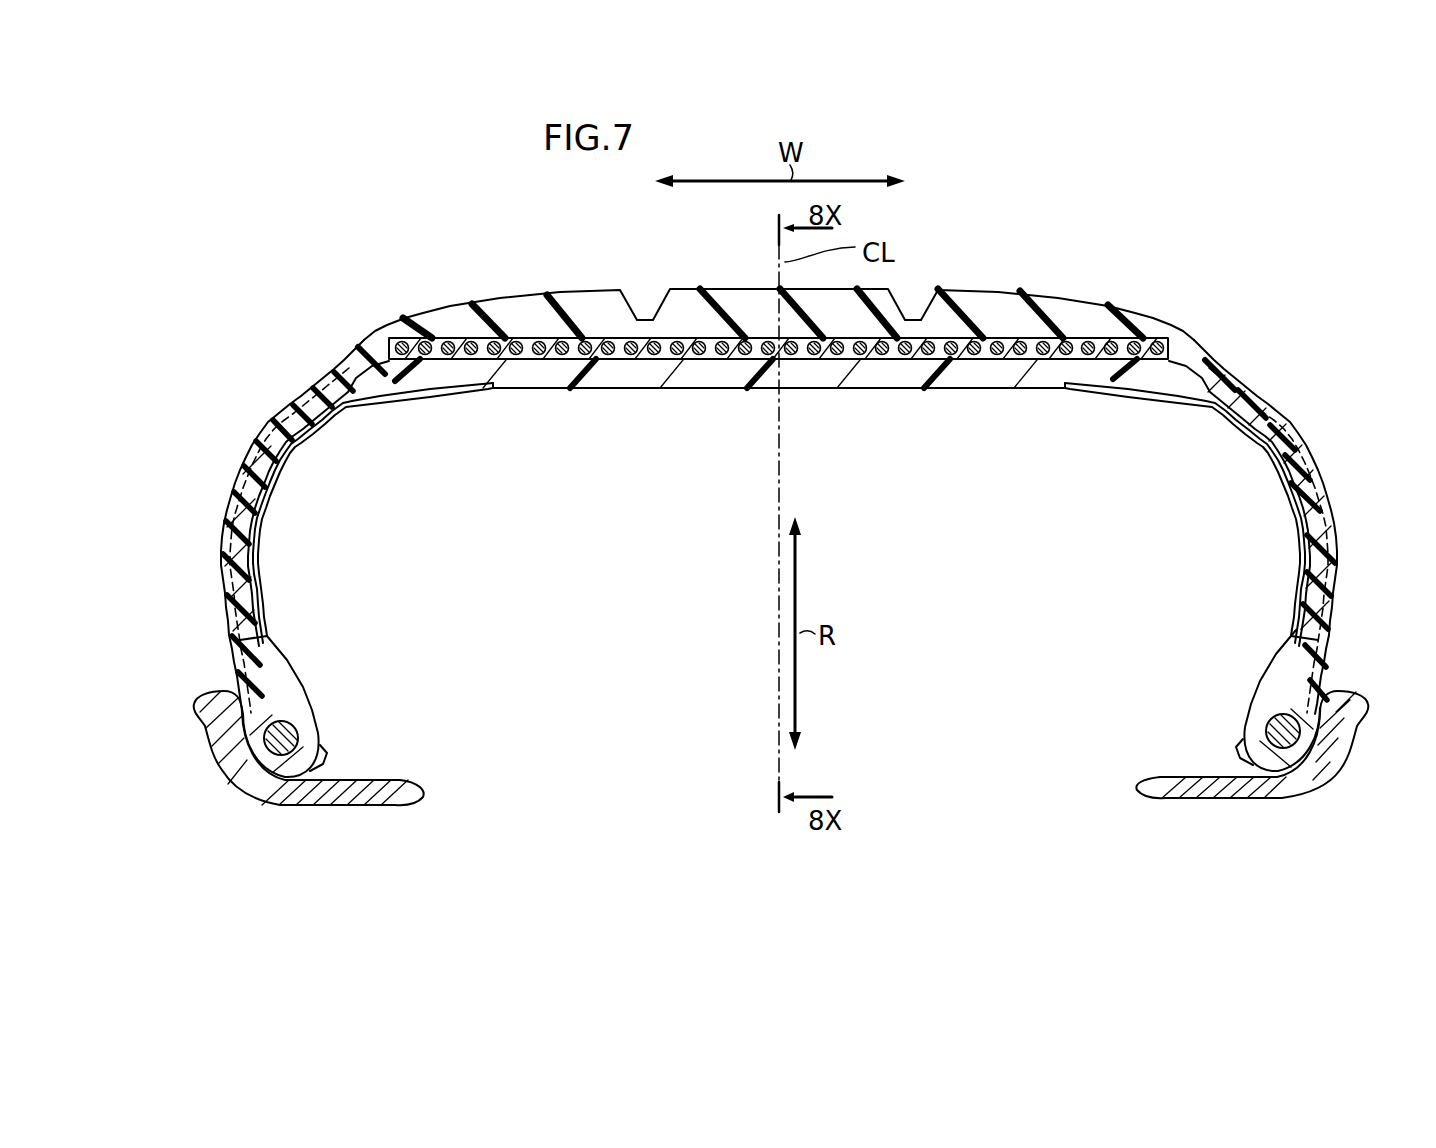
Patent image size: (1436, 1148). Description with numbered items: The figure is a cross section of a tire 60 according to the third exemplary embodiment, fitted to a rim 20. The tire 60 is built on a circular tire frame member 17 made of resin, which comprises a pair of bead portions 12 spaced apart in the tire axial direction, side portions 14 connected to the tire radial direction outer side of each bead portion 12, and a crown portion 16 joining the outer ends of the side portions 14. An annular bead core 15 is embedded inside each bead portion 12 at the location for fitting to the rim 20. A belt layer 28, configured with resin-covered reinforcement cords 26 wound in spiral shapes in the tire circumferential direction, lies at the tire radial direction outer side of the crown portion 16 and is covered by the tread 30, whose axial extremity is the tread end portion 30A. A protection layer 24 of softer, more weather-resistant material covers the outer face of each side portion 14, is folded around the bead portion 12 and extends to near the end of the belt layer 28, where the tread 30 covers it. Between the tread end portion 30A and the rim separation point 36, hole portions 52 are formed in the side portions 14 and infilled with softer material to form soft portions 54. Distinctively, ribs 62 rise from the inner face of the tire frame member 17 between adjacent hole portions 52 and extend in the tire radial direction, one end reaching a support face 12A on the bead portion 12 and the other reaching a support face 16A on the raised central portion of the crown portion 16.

The bead portion 12 is at (305, 686).
The support face 12A is at (323, 732).
The side portion 14 is at (222, 518).
The bead core 15 is at (288, 725).
The crown portion 16 is at (627, 395).
The support face 16A is at (482, 390).
The tire frame member 17 is at (347, 407).
The rim 20 is at (796, 748).
The protection layer 24 is at (227, 577).
The reinforcement cord 26 is at (1132, 343).
The belt layer 28 is at (1180, 346).
The tread 30 is at (1047, 292).
The tread end portion 30A is at (333, 378).
The rim separation point 36 is at (1335, 705).
The hole portion 52 is at (265, 623).
The soft portion 54 is at (253, 540).
The tire 60 is at (780, 484).
The rib 62 is at (273, 482).